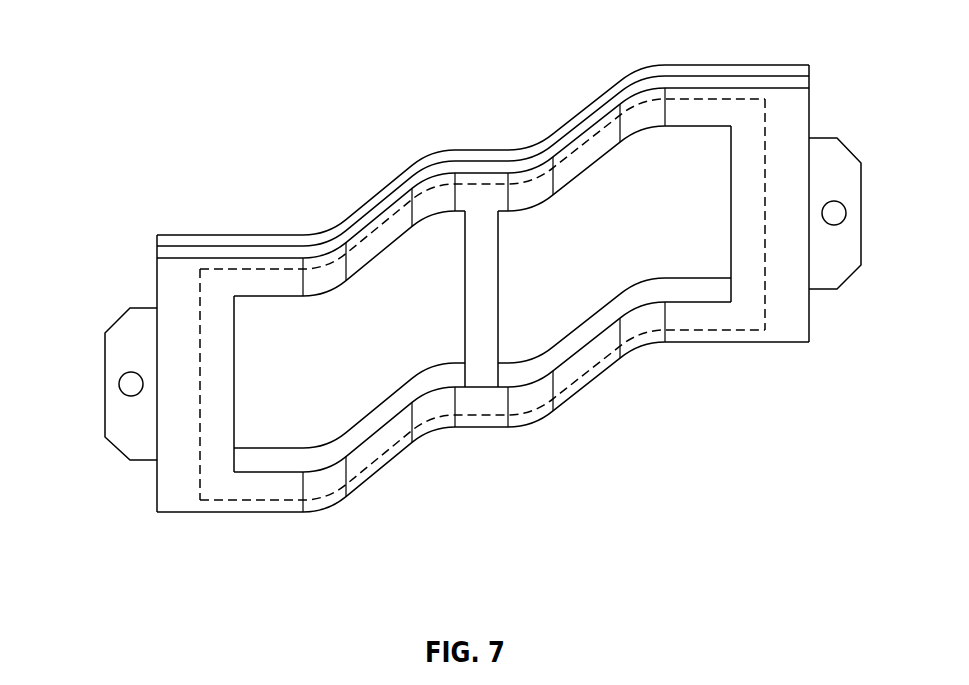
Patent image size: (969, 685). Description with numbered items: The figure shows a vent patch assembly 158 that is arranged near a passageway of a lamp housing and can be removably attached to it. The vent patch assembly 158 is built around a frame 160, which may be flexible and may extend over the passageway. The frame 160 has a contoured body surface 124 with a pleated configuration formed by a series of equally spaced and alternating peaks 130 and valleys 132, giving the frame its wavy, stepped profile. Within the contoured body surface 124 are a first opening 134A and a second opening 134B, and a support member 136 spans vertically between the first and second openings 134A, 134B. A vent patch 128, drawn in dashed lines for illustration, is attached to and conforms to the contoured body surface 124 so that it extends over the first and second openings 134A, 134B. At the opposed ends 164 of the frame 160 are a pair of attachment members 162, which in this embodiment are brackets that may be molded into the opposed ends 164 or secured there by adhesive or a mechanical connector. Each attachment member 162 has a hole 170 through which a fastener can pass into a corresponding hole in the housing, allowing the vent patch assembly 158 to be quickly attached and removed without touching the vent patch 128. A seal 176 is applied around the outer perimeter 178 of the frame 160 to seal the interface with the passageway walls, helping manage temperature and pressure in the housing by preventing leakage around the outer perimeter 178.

The vent patch assembly 158 is at (134, 33).
The contoured body surface 124 is at (257, 514).
The vent patch 128 is at (198, 463).
The peaks 130 is at (328, 507).
The valleys 132 is at (447, 428).
The first opening 134A is at (373, 287).
The second opening 134B is at (625, 180).
The support member 136 is at (463, 243).
The frame 160 is at (787, 343).
The attachment members 162 is at (105, 343).
The opposed ends 164 is at (157, 272).
The hole 170 is at (119, 387).
The seal 176 is at (192, 234).
The outer perimeter 178 is at (753, 64).